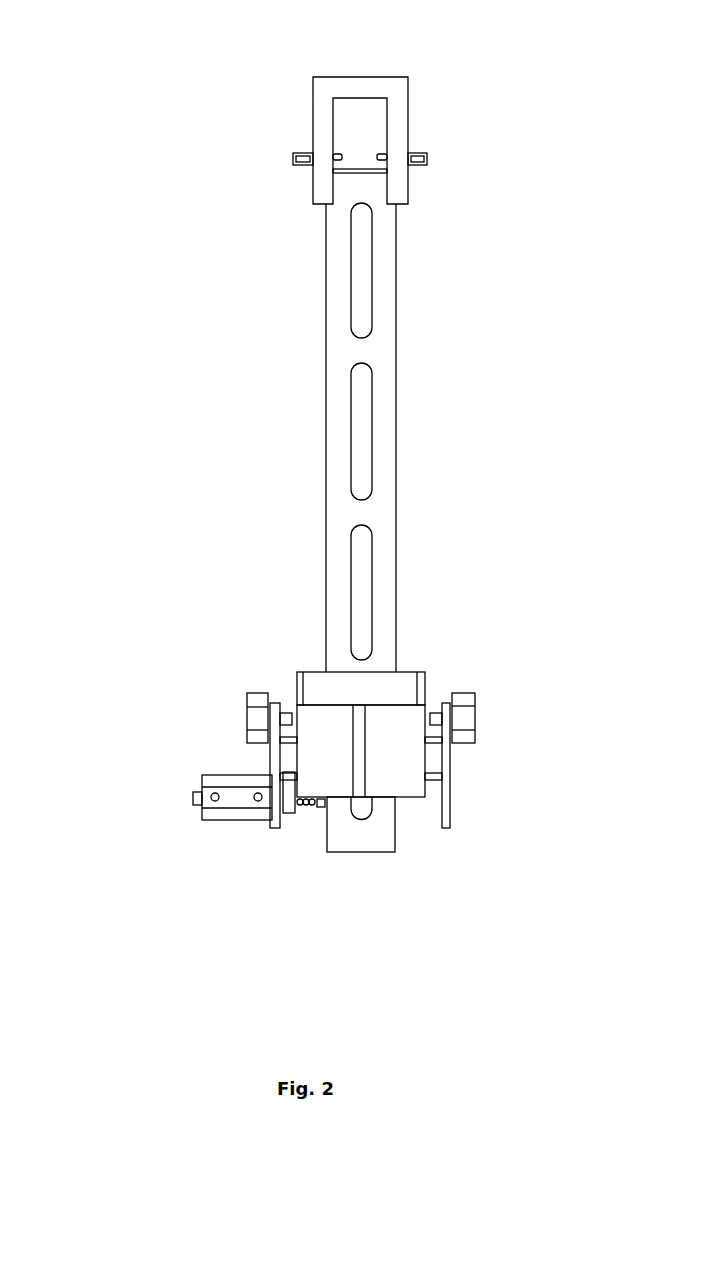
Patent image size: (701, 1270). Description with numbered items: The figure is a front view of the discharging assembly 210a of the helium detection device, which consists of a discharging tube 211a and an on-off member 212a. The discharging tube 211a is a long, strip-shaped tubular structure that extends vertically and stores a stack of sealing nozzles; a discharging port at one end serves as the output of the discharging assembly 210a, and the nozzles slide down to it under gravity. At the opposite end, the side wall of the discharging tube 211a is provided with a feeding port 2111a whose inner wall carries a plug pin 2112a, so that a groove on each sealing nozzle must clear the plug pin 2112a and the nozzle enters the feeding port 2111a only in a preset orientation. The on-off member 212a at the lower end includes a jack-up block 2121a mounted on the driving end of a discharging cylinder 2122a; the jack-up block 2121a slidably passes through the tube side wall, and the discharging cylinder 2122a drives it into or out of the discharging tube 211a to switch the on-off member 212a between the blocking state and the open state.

The discharging assembly 210a is at (104, 61).
The discharging tube 211a is at (390, 314).
The feeding port 2111a is at (388, 122).
The plug pin 2112a is at (340, 156).
The on-off member 212a is at (295, 936).
The jack-up block 2121a is at (323, 806).
The discharging cylinder 2122a is at (258, 814).